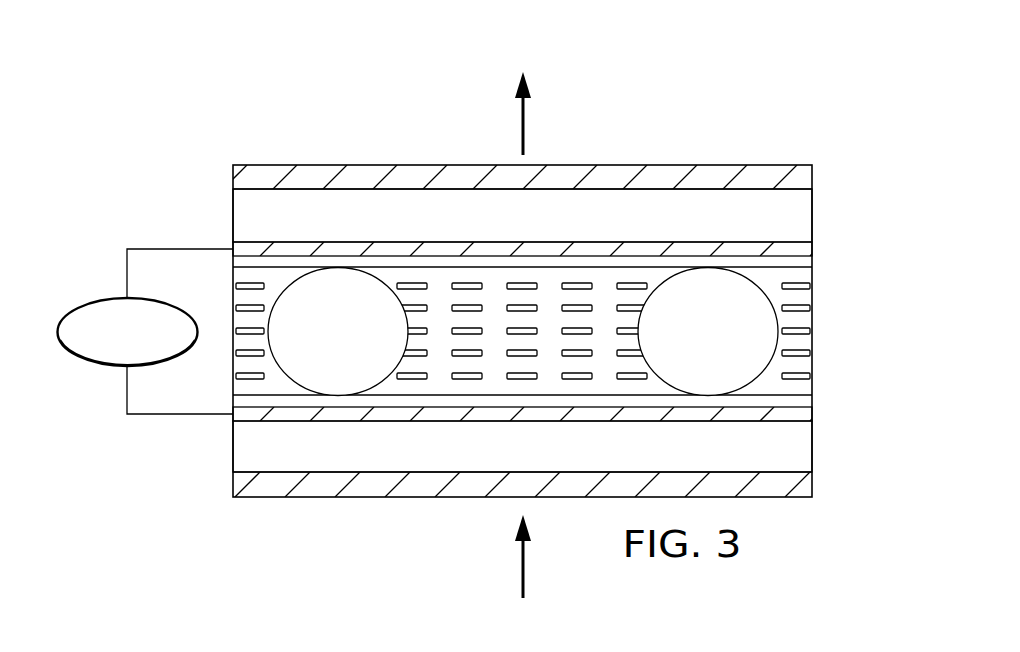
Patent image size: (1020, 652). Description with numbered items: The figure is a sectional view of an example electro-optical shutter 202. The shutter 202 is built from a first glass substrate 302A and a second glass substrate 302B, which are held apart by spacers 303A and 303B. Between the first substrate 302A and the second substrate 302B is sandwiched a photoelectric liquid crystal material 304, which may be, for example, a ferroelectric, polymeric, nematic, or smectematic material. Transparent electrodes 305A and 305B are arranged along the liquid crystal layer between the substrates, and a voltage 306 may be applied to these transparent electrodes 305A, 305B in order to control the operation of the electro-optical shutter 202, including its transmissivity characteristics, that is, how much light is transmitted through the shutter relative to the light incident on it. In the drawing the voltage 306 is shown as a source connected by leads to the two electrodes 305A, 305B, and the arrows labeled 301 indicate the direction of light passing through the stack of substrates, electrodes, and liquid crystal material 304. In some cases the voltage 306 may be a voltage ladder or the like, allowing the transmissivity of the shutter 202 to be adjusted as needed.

The electro-optical shutter 202 is at (687, 70).
The flow direction arrows 301 is at (520, 123).
The first glass substrate 302A is at (240, 446).
The second glass substrate 302B is at (242, 213).
The spacer 303A is at (371, 348).
The spacer 303B is at (741, 348).
The photoelectric liquid crystal material 304 is at (443, 285).
The transparent electrode 305A is at (806, 415).
The transparent electrode 305B is at (806, 248).
The voltage 306 is at (106, 368).